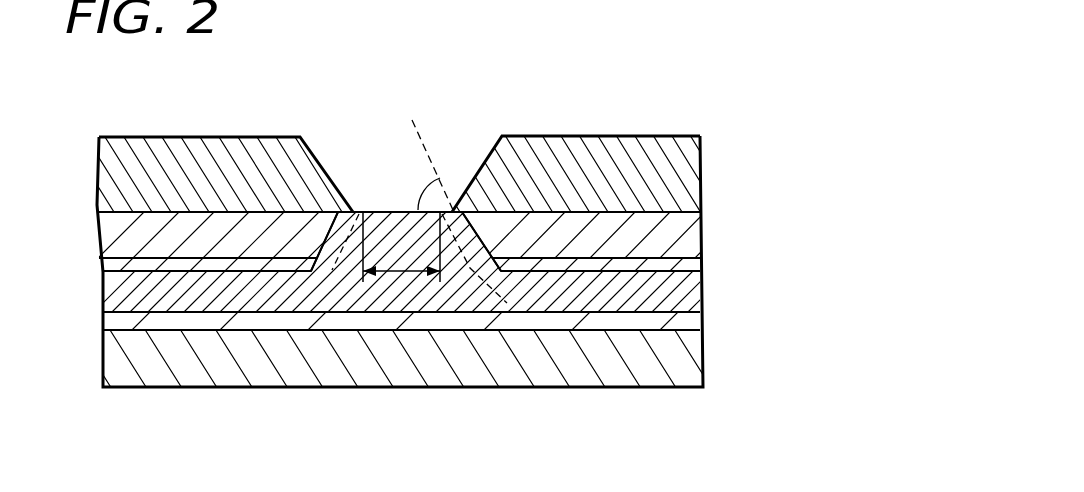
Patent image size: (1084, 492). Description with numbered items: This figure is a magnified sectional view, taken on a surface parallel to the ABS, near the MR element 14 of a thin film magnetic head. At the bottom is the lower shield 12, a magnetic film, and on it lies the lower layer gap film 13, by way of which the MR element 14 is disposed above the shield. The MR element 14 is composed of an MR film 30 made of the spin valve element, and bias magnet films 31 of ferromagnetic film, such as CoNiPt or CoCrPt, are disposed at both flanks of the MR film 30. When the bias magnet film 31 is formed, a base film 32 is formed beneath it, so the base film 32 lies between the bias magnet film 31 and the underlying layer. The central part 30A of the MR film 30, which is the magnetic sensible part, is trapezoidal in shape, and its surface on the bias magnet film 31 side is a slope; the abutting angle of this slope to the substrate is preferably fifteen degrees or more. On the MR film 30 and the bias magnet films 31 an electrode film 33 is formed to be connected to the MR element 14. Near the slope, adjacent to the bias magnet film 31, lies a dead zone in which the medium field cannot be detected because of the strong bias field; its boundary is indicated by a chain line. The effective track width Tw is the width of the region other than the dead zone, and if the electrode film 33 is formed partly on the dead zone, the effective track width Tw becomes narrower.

The lower shield 12 is at (705, 358).
The lower layer gap film 13 is at (705, 319).
The MR element 14 is at (705, 288).
The MR film 30 is at (578, 258).
The central part 30A is at (400, 237).
The bias magnet film 31 is at (100, 228).
The base film 32 is at (103, 263).
The electrode film 33 is at (102, 175).
The effective track width Tw is at (411, 272).